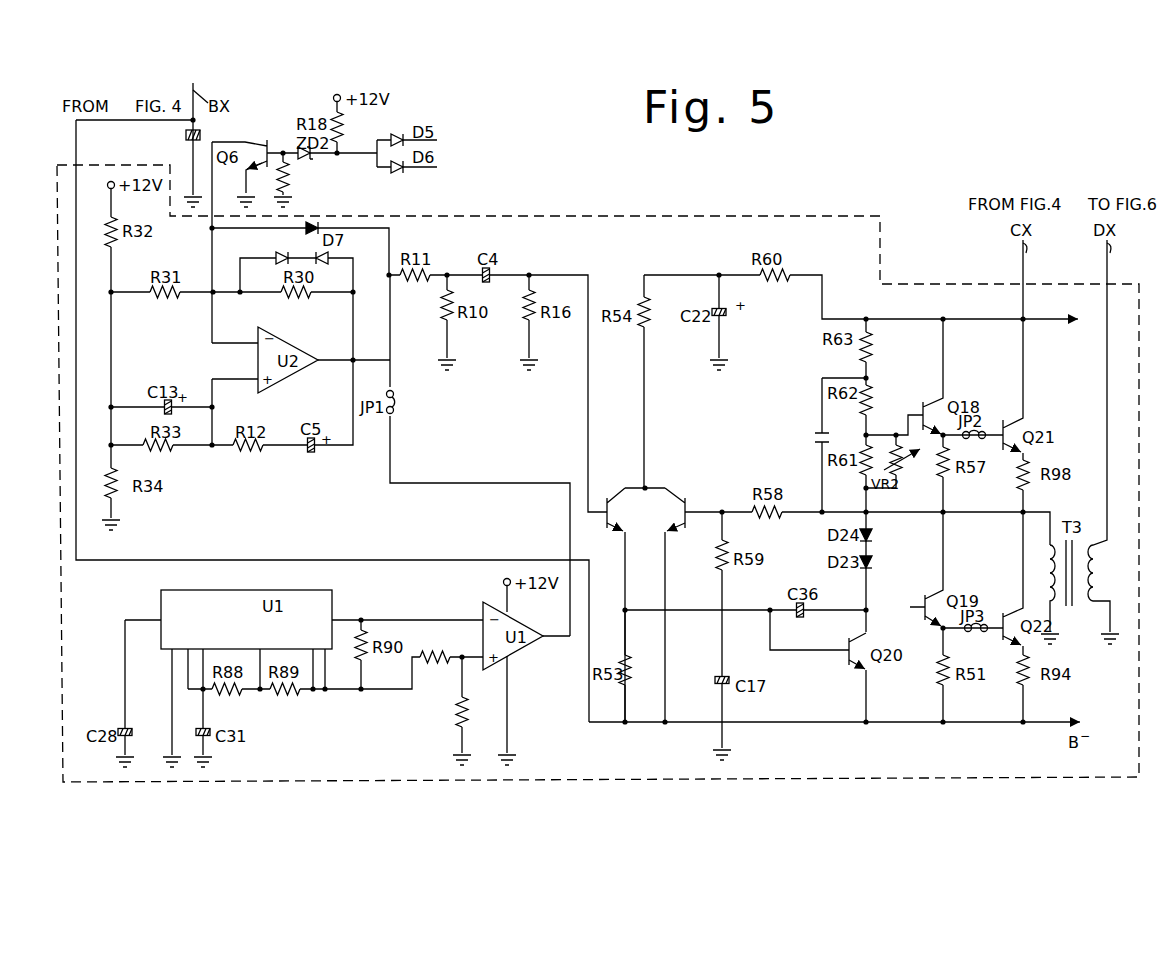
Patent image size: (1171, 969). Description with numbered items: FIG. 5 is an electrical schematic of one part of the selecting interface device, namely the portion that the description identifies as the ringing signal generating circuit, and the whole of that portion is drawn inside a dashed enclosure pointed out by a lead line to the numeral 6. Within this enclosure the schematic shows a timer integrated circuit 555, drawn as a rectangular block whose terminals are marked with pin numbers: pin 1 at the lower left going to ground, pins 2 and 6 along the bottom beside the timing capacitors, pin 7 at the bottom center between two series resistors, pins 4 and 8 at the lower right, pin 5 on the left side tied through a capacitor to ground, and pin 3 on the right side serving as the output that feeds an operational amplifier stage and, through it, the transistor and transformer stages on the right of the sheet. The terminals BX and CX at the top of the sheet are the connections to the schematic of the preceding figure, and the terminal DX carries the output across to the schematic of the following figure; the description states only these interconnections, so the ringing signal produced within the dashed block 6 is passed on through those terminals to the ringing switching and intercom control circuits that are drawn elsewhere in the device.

The power supply circuit 6 is at (1135, 333).
The 555 timer U1 555 is at (246, 619).
The timer pin 1 (ground) 1 is at (172, 698).
The pin 2 (timer trigger / U2 inverting input) 2 is at (220, 515).
The pin 3 (timer output / U2 non-inverting input) 3 is at (286, 496).
The timer pin 4 (reset) 4 is at (313, 659).
The pin 5 (timer control / U1 non-inverting input) 5 is at (304, 634).
The pin 7 (timer discharge / U1 output) 7 is at (413, 659).
The timer pin 8 (supply) 8 is at (326, 659).